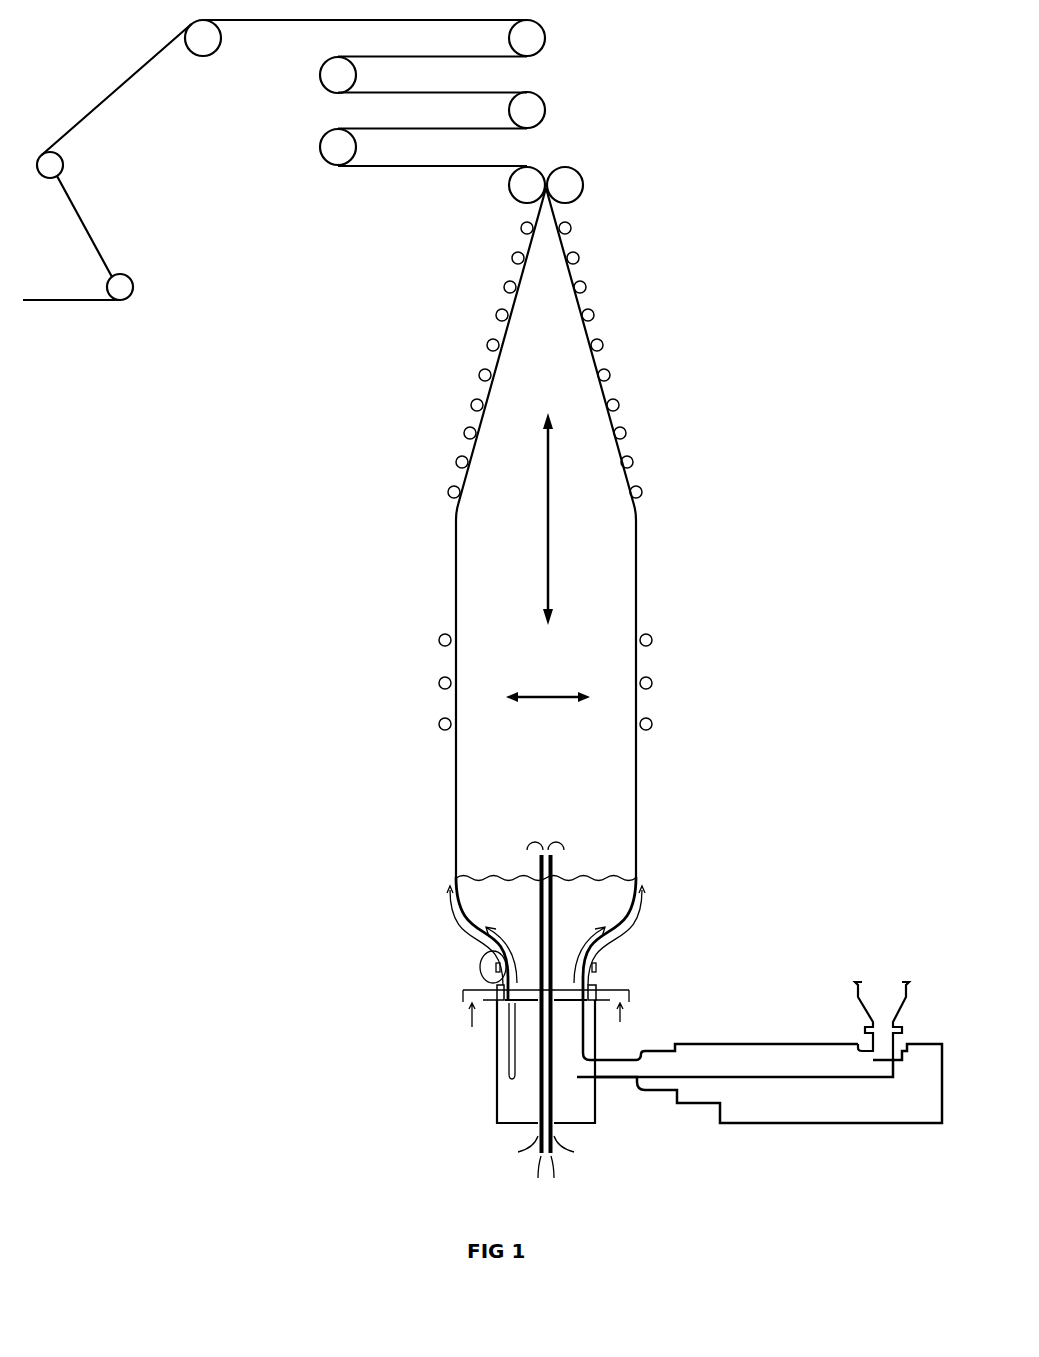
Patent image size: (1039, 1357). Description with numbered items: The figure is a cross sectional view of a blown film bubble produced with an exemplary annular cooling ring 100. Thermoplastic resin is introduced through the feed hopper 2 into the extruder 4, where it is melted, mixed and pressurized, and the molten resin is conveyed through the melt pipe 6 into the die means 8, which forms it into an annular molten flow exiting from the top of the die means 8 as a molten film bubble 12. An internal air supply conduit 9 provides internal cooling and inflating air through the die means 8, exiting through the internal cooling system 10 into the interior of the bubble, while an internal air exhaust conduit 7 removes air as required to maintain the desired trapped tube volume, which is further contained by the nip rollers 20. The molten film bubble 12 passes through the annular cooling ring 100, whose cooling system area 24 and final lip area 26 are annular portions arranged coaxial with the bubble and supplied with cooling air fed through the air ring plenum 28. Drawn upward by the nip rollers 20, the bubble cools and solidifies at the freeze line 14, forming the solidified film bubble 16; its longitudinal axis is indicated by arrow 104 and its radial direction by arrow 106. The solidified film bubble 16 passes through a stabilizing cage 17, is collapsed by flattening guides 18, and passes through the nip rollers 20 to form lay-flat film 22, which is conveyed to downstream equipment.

The annular cooling ring 100 is at (422, 987).
The lay-flat film 22 is at (462, 168).
The nip rollers 20 is at (510, 197).
The flattening guides 18 is at (449, 495).
The stabilizing cage 17 is at (439, 643).
The solidified film bubble 16 is at (455, 773).
The arrow indicating longitudinal axis 104 is at (548, 539).
The arrow indicating radial direction 106 is at (550, 699).
The freeze line 14 is at (520, 878).
The internal air exhaust conduit 7 is at (549, 875).
The molten film bubble 12 is at (455, 913).
The final lip area 26 is at (483, 960).
The air ring plenum 28 is at (497, 993).
The cooling system area 24 is at (495, 1000).
The internal cooling system 10 is at (565, 997).
The die means 8 is at (507, 1102).
The internal air supply conduit 9 is at (537, 1126).
The melt pipe 6 is at (610, 1058).
The extruder 4 is at (745, 1043).
The feed hopper 2 is at (855, 982).